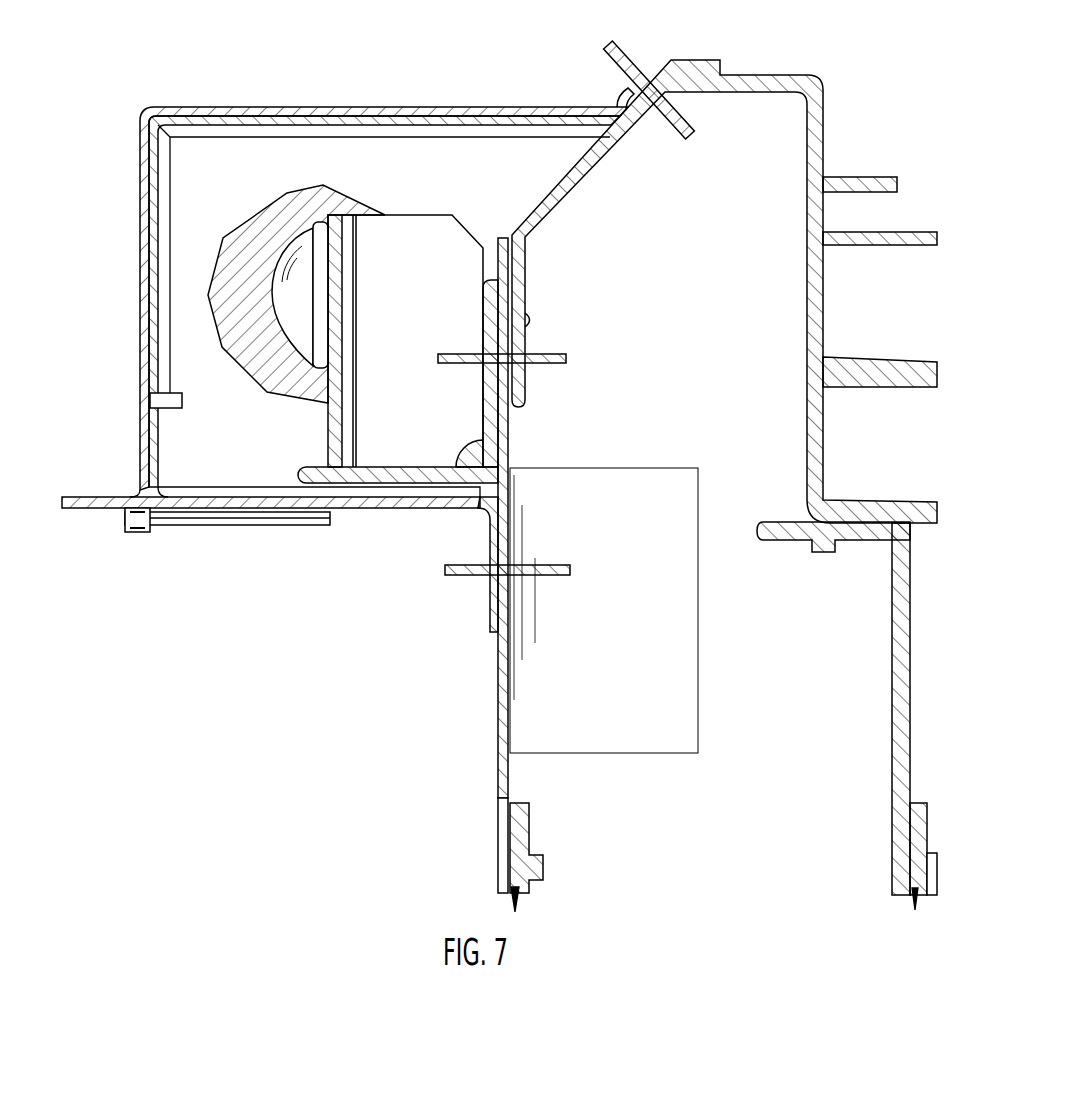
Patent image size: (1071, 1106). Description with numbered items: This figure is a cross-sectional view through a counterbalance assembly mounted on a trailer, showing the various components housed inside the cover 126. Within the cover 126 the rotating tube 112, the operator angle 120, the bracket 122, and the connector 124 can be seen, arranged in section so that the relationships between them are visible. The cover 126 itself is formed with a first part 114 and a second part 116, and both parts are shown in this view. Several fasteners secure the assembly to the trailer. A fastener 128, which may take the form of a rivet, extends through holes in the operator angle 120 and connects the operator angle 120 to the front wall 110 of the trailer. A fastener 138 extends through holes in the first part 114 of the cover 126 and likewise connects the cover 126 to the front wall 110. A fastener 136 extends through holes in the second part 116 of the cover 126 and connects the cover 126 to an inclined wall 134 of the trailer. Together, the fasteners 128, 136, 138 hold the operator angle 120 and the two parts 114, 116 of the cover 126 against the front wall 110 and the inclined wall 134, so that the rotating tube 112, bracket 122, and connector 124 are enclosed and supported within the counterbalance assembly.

The front wall 110 is at (498, 842).
The rotating tube 112 is at (210, 312).
The first part 114 is at (348, 508).
The second part 116 is at (136, 409).
The operator angle 120 is at (457, 468).
The bracket 122 is at (417, 235).
The connector 124 is at (287, 253).
The cover 126 is at (138, 455).
The fastener 128 is at (566, 358).
The inclined wall 134 is at (572, 187).
The fastener 136 is at (630, 62).
The fastener 138 is at (470, 575).